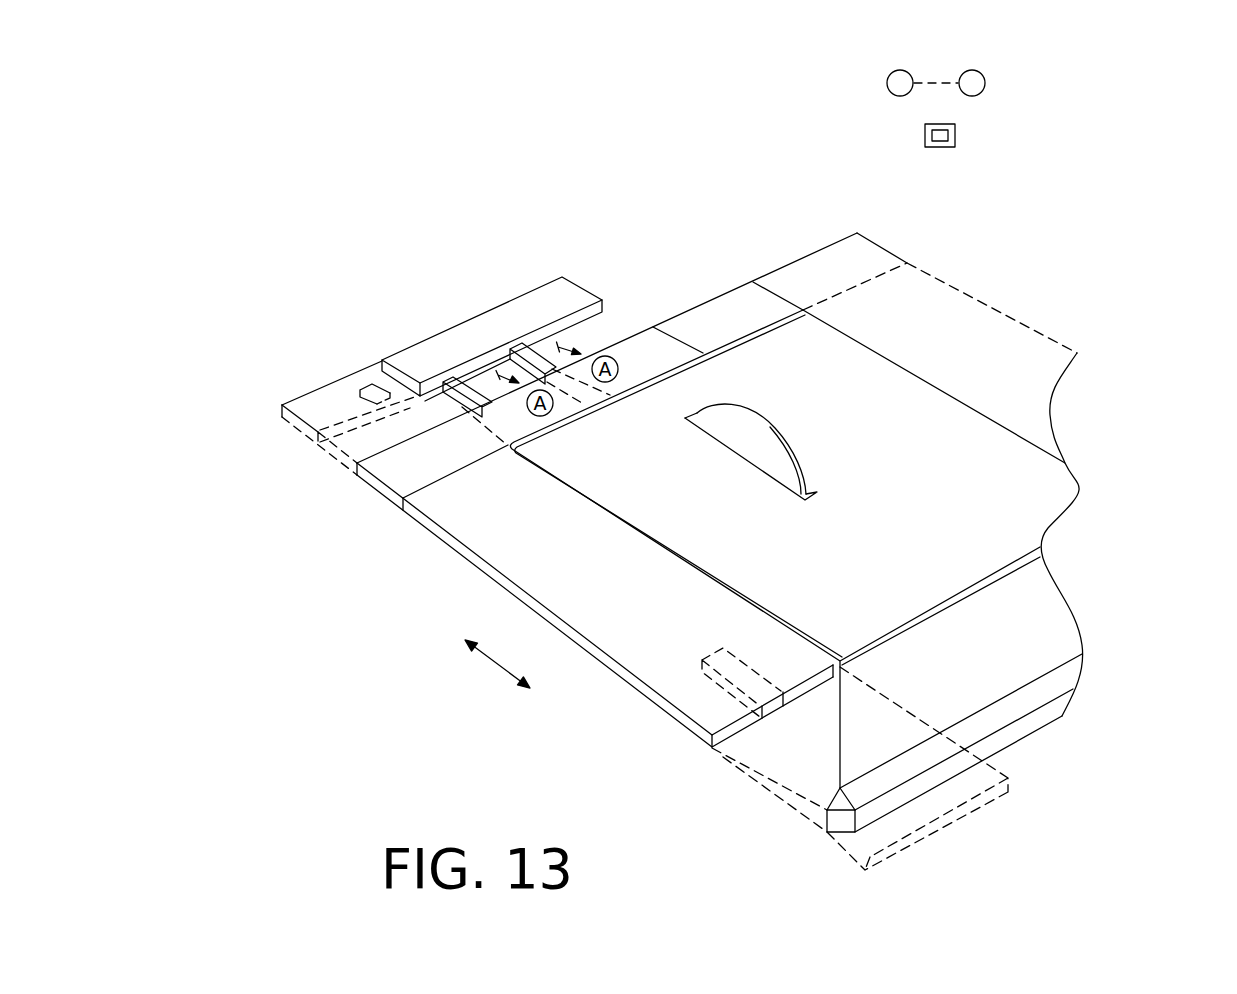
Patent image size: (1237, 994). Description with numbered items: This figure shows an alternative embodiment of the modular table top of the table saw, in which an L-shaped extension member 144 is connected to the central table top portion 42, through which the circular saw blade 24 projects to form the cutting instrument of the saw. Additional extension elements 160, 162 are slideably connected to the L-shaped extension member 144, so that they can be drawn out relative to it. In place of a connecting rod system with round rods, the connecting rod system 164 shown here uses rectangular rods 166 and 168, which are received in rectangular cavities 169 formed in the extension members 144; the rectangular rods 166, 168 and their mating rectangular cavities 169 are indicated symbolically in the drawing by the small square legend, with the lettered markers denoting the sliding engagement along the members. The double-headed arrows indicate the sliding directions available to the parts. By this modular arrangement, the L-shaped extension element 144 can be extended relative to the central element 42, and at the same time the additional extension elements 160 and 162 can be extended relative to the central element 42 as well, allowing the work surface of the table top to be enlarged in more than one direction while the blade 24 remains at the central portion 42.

The circular saw blade 24 is at (775, 422).
The central table top portion 42 is at (1040, 510).
The L-shaped extension member 144 is at (940, 285).
The additional extension element 160 is at (583, 292).
The additional extension element 162 is at (290, 402).
The connecting rod system 164 is at (1008, 126).
The rectangular rod 166 is at (945, 148).
The rectangular rod 168 is at (924, 130).
The rectangular cavity 169 is at (752, 673).